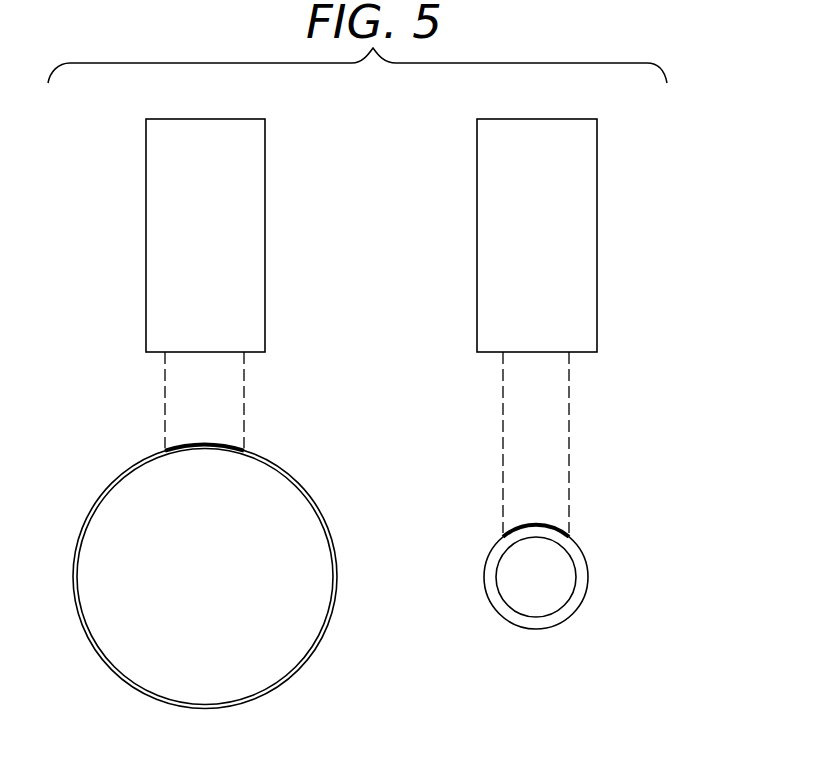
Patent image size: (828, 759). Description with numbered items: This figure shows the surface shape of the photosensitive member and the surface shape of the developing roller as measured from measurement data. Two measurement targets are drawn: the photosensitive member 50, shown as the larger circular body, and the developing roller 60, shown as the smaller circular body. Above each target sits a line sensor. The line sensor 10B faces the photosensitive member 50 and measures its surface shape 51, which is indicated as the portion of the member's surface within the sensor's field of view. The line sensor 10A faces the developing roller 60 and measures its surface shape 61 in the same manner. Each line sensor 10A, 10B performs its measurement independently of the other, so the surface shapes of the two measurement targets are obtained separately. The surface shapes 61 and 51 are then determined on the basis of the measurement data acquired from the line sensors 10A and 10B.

The line sensor 10B is at (232, 119).
The line sensor 10A is at (562, 119).
The photosensitive member 50 is at (280, 670).
The surface shape of the photosensitive member 51 is at (228, 448).
The developing roller 60 is at (562, 608).
The surface shape of the developing roller 61 is at (555, 531).